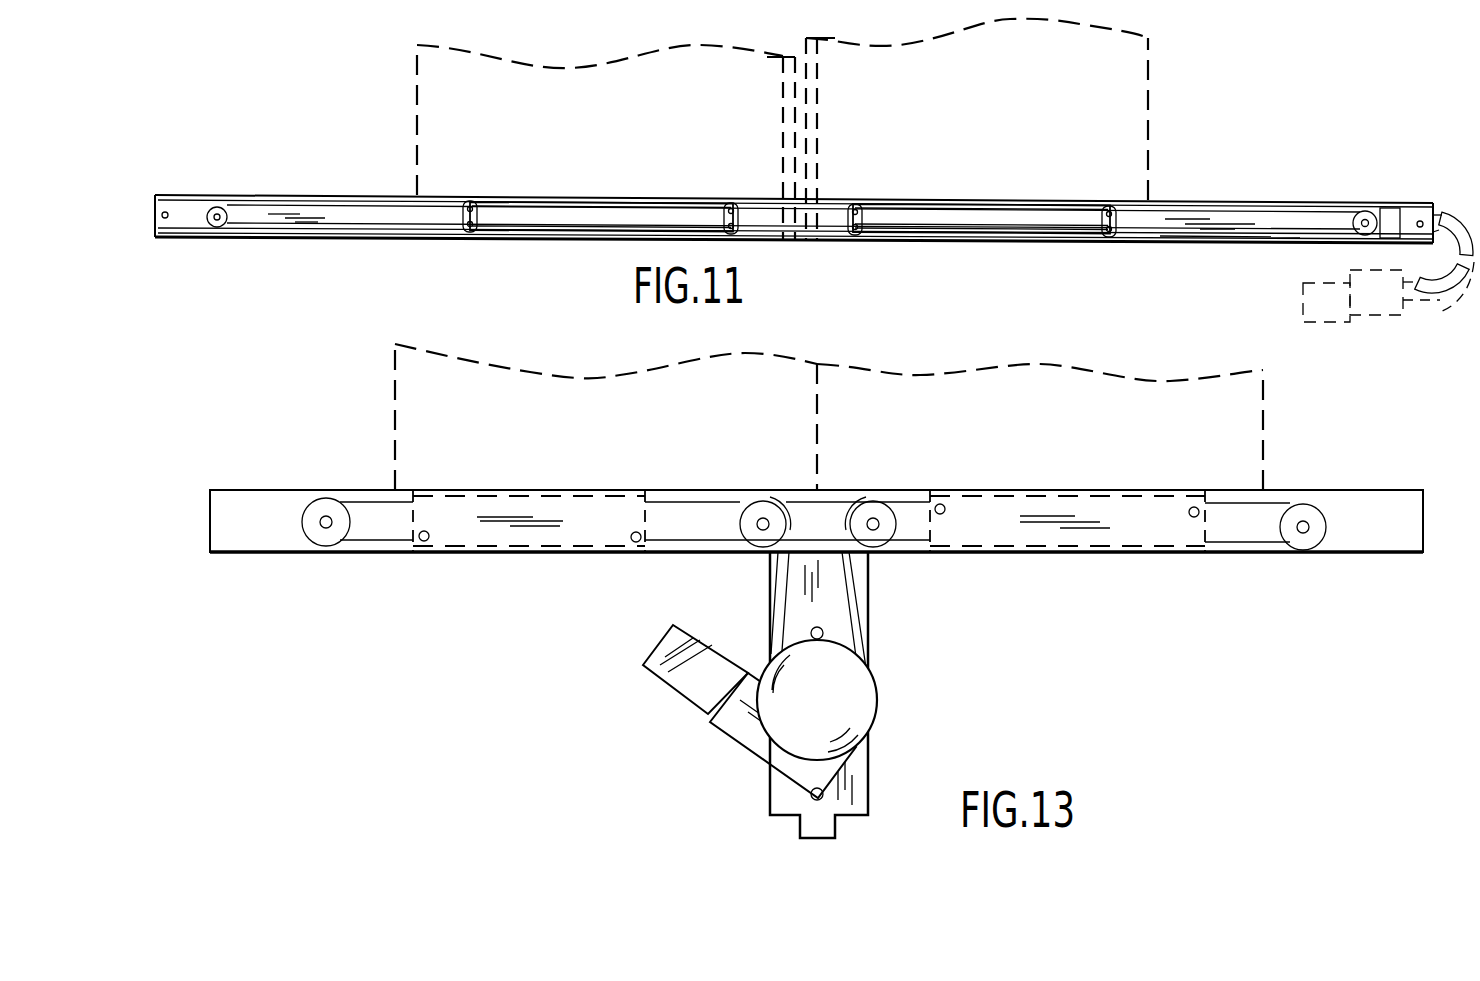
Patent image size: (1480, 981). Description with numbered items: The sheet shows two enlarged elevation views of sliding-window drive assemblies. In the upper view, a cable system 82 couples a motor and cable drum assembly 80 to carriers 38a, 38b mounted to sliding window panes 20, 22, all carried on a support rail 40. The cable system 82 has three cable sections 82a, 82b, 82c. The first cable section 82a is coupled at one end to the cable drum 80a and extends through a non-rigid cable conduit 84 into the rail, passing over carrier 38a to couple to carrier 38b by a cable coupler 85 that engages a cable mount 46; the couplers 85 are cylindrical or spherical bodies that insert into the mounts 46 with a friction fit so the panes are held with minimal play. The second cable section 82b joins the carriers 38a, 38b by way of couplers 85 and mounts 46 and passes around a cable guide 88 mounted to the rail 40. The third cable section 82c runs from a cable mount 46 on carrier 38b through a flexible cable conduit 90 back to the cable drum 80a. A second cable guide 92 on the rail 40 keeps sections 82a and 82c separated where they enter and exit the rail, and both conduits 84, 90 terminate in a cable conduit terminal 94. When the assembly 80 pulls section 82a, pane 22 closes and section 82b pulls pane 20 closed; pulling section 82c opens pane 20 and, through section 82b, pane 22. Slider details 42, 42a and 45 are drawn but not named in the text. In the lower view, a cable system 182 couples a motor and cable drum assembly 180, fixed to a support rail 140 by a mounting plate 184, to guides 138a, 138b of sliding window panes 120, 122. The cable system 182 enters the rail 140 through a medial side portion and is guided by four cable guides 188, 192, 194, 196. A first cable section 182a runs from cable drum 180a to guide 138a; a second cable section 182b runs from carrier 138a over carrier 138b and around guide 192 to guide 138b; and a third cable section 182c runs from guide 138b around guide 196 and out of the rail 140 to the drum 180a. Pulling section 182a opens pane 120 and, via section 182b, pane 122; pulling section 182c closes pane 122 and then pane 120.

In FIG. 11, the sliding window pane 20 is at (430, 97).
In FIG. 11, the sliding window pane 22 is at (1178, 76).
In FIG. 11, the support rail 40 is at (187, 205).
In FIG. 11, the cable guide 88 is at (221, 208).
In FIG. 11, the cable system 82 is at (1282, 200).
In FIG. 11, the first cable section 82a is at (1229, 207).
In FIG. 11, the second cable section 82b is at (350, 208).
In FIG. 11, the third cable section 82c is at (1199, 236).
In FIG. 11, the cable coupler 85 is at (468, 204).
In FIG. 11, the cable mount 46 is at (478, 207).
In FIG. 11, the slider bar 42 is at (590, 204).
In FIG. 11, the slider bar portion 42a is at (1046, 207).
In FIG. 11, the slider body 45 is at (591, 236).
In FIG. 11, the carrier 38a is at (649, 188).
In FIG. 11, the carrier 38b is at (913, 188).
In FIG. 11, the second cable guide 92 is at (1366, 210).
In FIG. 11, the cable conduit terminal 94 is at (1391, 207).
In FIG. 11, the non-rigid cable conduit 84 is at (1446, 212).
In FIG. 11, the flexible cable conduit 90 is at (1447, 296).
In FIG. 11, the motor and cable drum assembly 80 is at (1359, 326).
In FIG. 11, the cable drum 80a is at (1390, 316).
In FIG. 13, the sliding window pane 120 is at (401, 397).
In FIG. 13, the sliding window pane 122 is at (1263, 421).
In FIG. 13, the support rail 140 is at (1014, 493).
In FIG. 13, the guide 138a is at (445, 550).
In FIG. 13, the guide 138b is at (1077, 550).
In FIG. 13, the cable guide 188 is at (317, 512).
In FIG. 13, the cable guide 192 is at (1311, 516).
In FIG. 13, the cable guide 194 is at (756, 513).
In FIG. 13, the cable guide 196 is at (866, 513).
In FIG. 13, the cable system 182 is at (768, 585).
In FIG. 13, the first cable section 182a is at (372, 550).
In FIG. 13, the second cable section 182b is at (1254, 552).
In FIG. 13, the third cable section 182c is at (911, 502).
In FIG. 13, the mounting plate 184 is at (874, 596).
In FIG. 13, the motor and cable drum assembly 180 is at (834, 712).
In FIG. 13, the cable drum 180a is at (857, 680).